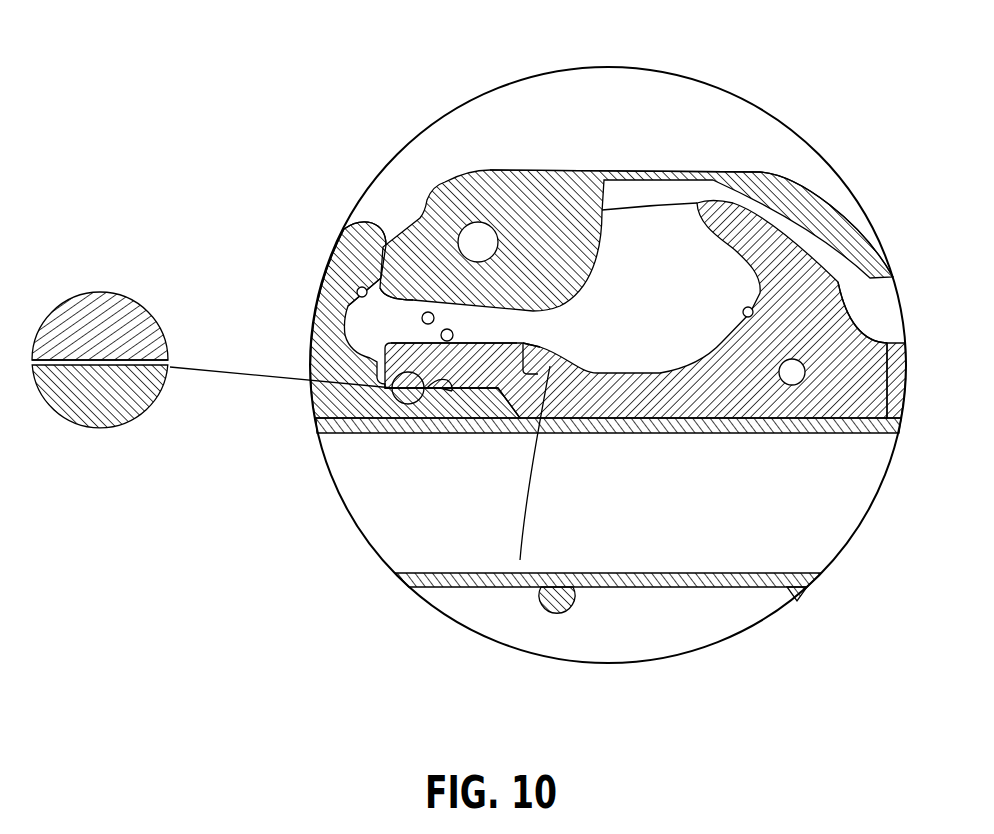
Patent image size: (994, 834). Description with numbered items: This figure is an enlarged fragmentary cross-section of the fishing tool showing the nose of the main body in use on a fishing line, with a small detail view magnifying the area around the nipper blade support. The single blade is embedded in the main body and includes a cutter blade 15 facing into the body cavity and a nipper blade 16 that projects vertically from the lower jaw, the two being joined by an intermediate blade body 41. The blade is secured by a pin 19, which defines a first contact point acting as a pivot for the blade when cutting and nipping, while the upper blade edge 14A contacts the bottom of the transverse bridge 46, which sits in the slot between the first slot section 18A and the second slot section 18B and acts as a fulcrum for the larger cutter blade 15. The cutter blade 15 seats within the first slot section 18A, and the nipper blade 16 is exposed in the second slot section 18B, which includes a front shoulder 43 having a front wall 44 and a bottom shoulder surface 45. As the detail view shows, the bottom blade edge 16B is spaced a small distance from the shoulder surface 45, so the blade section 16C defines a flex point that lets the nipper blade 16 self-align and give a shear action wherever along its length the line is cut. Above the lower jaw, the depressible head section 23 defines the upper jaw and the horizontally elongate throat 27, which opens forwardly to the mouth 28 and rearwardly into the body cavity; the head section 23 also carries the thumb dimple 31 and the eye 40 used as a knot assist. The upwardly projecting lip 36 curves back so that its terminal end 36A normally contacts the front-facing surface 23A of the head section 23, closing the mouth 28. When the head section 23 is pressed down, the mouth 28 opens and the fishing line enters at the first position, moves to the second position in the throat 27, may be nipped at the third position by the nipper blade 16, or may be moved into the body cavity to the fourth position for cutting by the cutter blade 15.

The upper blade edge 14A is at (575, 368).
The cutter blade 15 is at (760, 283).
The nipper blade 16 is at (350, 320).
The bottom blade edge 16B is at (465, 392).
The blade section 16C is at (493, 392).
The first slot section 18A is at (722, 193).
The second slot section 18B is at (453, 392).
The pin 19 is at (792, 380).
The head section 23 is at (490, 172).
The front-facing surface 23A is at (380, 285).
The throat 27 is at (468, 330).
The mouth 28 is at (323, 310).
The thumb dimple 31 is at (446, 329).
The lip 36 is at (360, 268).
The terminal end 36A is at (364, 225).
The eye 40 is at (478, 238).
The intermediate blade body 41 is at (805, 364).
The front shoulder 43 is at (411, 396).
The front wall 44 is at (372, 360).
The bottom shoulder surface 45 is at (443, 392).
The transverse bridge 46 is at (532, 350).